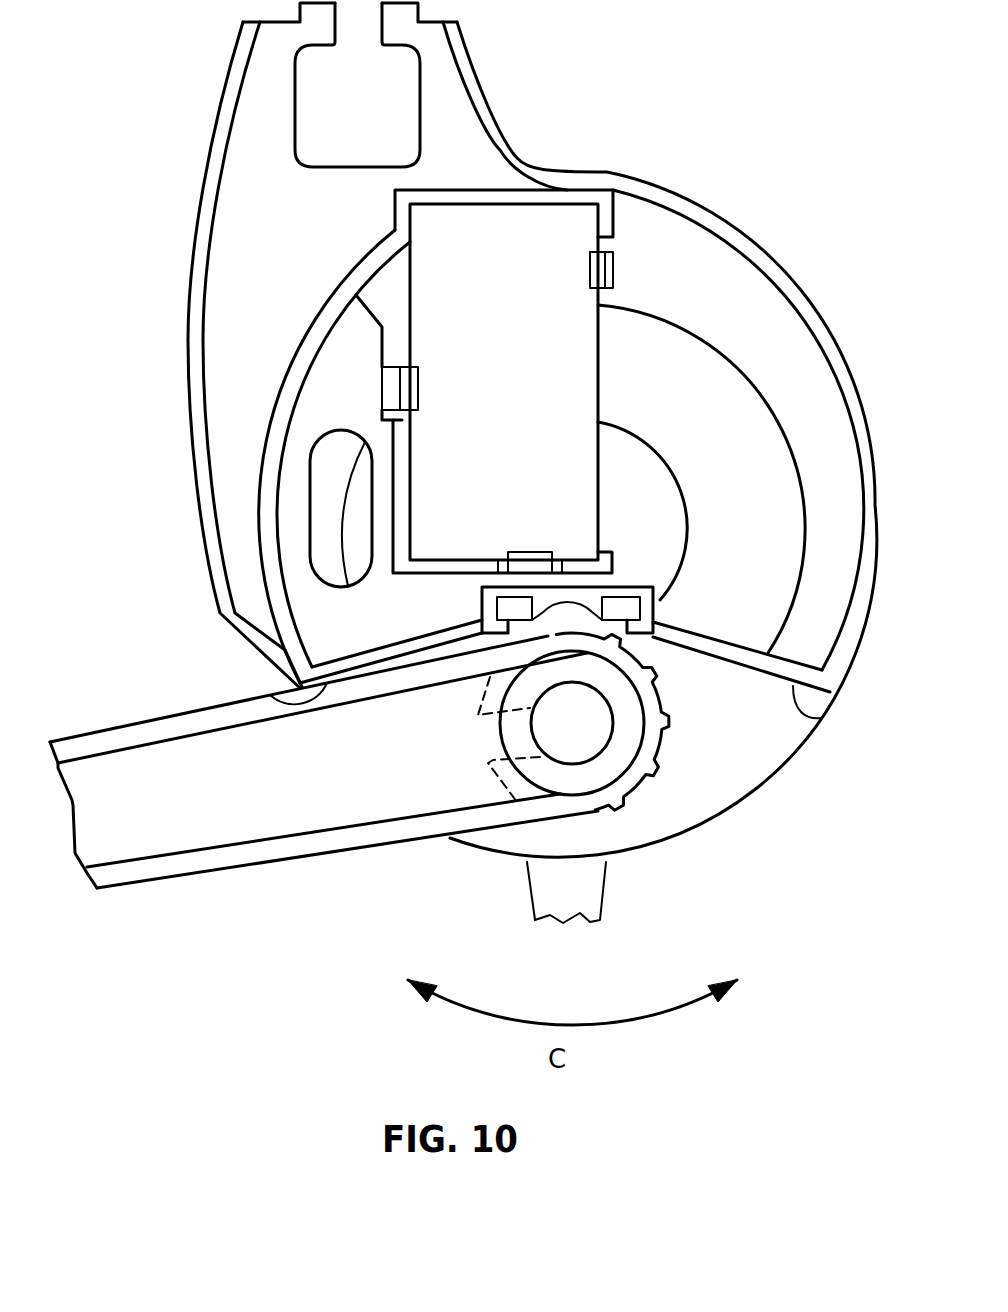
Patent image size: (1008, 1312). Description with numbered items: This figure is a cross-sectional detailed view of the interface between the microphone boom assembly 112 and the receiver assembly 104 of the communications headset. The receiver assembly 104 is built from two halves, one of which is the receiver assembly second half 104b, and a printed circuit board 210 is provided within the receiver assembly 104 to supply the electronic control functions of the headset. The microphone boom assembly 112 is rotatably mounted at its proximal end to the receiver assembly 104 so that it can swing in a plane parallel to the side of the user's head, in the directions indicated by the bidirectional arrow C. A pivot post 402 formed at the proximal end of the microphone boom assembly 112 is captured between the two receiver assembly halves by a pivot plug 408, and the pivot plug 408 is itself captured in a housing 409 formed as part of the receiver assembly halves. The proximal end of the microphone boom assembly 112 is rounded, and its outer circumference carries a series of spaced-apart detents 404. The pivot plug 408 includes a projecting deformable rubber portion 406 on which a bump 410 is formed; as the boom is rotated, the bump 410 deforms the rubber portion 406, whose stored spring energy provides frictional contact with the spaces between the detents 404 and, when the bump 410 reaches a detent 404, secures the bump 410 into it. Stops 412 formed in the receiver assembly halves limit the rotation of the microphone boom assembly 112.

The receiver assembly 104 is at (777, 250).
The receiver assembly second half 104b is at (598, 168).
The printed circuit board 210 is at (550, 278).
The projecting deformable rubber portion 406 is at (598, 590).
The pivot plug 408 is at (627, 600).
The housing 409 is at (570, 603).
The bump 410 is at (645, 655).
The stops 412 is at (273, 693).
The detents 404 is at (650, 672).
The pivot post 402 is at (602, 817).
The microphone boom assembly 112 is at (217, 883).